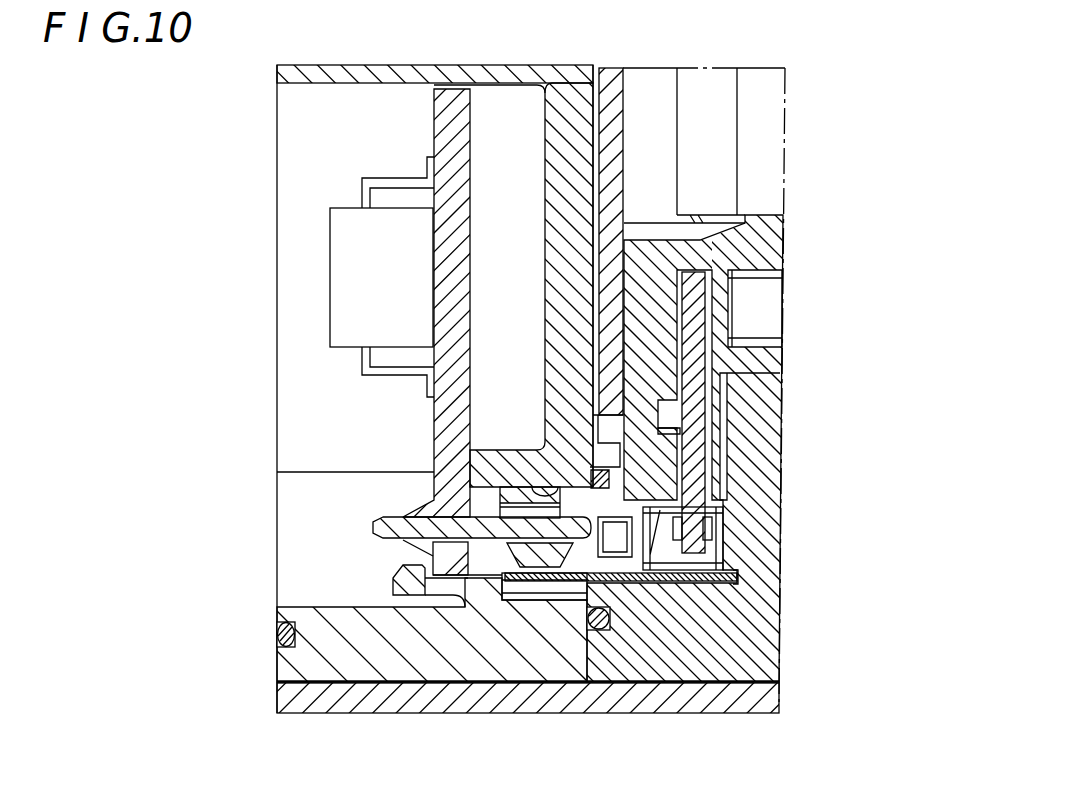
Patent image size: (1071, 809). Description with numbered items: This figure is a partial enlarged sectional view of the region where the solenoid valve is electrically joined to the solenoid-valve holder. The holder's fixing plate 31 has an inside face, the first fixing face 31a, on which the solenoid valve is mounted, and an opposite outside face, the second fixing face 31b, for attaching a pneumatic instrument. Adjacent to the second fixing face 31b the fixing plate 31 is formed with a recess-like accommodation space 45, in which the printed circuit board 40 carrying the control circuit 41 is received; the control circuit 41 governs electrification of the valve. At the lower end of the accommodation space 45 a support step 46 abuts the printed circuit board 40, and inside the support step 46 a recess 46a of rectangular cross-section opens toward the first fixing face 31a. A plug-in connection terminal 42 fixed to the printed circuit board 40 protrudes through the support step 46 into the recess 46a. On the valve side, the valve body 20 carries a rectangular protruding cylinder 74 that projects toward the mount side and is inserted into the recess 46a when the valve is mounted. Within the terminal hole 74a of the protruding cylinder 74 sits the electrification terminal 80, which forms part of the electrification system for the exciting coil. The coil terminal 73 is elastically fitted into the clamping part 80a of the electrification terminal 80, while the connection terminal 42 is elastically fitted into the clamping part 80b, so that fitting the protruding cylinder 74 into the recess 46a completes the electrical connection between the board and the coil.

The valve body 20 is at (753, 612).
The fixing plate 31 is at (308, 665).
The first fixing face 31a is at (590, 645).
The second fixing face 31b is at (285, 622).
The printed circuit board 40 is at (434, 432).
The control circuit 41 is at (330, 271).
The connection terminal 42 is at (545, 540).
The accommodation space 45 is at (347, 86).
The support step 46 is at (434, 501).
The recess 46a is at (545, 490).
The coil terminal 73 is at (695, 461).
The protruding cylinder 74 is at (570, 585).
The terminal hole 74a is at (628, 568).
The electrification terminal 80 is at (650, 560).
The clamping part 80a is at (715, 527).
The clamping part 80b is at (515, 595).